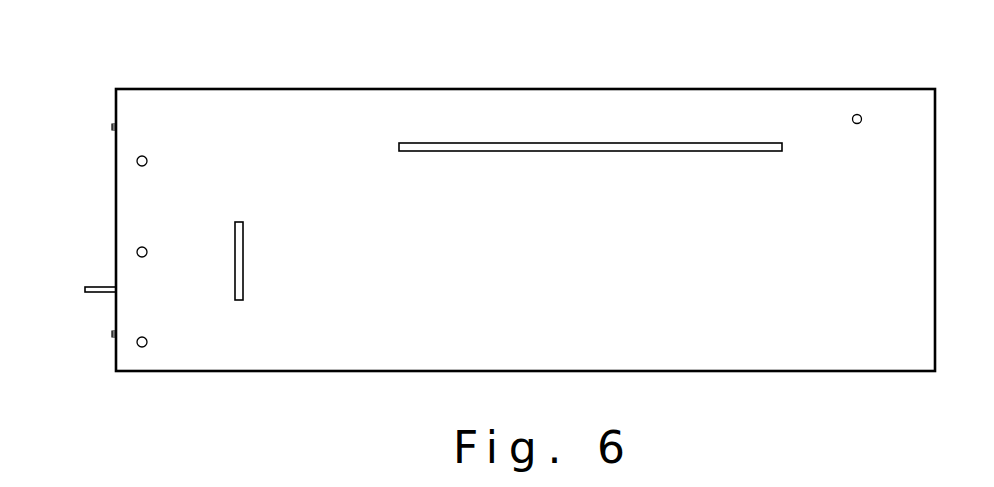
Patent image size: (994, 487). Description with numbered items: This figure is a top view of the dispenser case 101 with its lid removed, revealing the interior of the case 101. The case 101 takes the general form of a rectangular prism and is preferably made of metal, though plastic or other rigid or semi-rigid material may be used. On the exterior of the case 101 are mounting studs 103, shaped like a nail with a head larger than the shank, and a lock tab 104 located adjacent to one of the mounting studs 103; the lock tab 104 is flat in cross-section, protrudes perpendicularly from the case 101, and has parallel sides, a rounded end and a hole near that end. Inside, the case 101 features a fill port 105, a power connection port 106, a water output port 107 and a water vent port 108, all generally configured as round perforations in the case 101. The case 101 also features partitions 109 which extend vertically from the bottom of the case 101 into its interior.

The dispenser case 101 is at (871, 345).
The mounting stud 103 is at (112, 128).
The lock tab 104 is at (97, 291).
The fill port 105 is at (142, 347).
The power connection port 106 is at (145, 256).
The water output port 107 is at (144, 156).
The water vent port 108 is at (860, 115).
The partition 109 is at (508, 161).